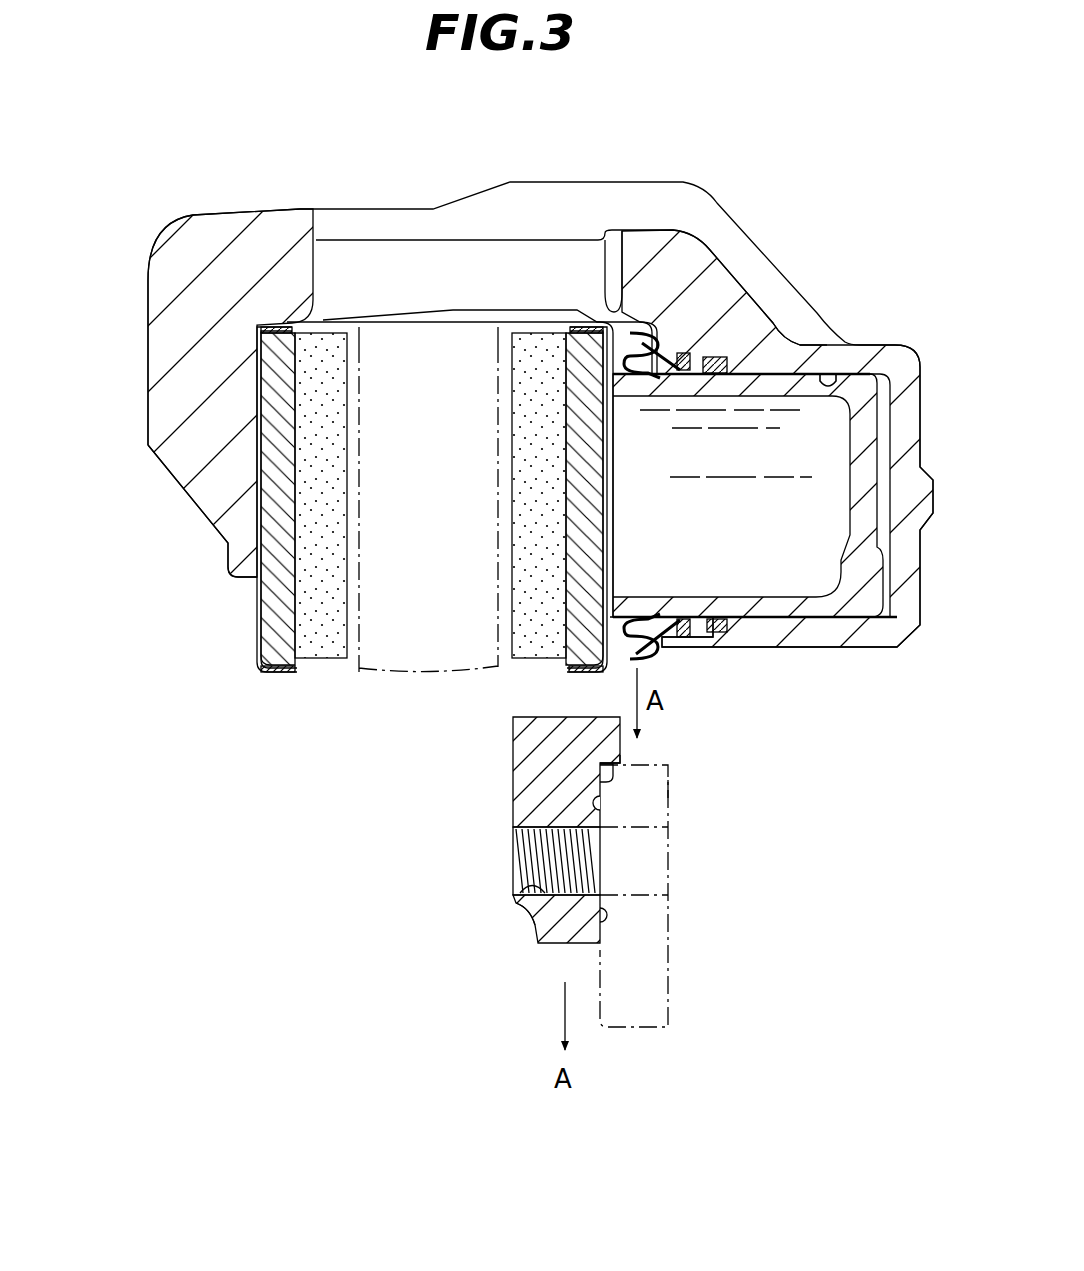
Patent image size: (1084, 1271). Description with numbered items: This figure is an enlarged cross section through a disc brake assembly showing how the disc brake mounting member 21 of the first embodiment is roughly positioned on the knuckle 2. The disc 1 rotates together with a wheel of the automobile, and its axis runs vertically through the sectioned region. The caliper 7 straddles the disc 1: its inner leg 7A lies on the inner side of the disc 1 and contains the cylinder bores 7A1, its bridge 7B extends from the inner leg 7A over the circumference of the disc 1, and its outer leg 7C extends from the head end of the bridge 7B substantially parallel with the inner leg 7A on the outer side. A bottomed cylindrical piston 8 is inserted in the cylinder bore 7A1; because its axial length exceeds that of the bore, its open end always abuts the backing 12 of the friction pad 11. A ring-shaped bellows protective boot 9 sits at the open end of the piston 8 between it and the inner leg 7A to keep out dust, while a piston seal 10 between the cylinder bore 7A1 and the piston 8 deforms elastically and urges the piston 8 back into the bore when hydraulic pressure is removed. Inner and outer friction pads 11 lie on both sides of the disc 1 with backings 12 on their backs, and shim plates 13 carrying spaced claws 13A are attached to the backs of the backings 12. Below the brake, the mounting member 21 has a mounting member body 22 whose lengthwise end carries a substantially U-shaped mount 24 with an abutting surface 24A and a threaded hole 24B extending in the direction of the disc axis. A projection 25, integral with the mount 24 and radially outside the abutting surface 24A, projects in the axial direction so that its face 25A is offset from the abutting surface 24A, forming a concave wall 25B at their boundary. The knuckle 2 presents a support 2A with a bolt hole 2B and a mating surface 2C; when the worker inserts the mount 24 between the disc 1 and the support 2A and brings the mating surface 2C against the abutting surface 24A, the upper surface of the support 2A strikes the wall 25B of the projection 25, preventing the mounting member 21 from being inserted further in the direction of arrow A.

The disc 1 is at (375, 672).
The knuckle 2 is at (681, 918).
The supports 2A is at (655, 788).
The bolt hole 2B is at (625, 887).
The mating surface 2C is at (640, 815).
The caliper 7 is at (504, 424).
The inner leg 7A is at (880, 648).
The cylinder bores 7A1 is at (830, 378).
The bridge 7B is at (360, 212).
The outer leg 7C is at (160, 356).
The piston 8 is at (800, 612).
The protective boot 9 is at (640, 659).
The piston seal 10 is at (713, 640).
The friction pads 11 is at (520, 347).
The backings 12 is at (582, 343).
The shim plates 13 is at (616, 340).
The claws 13A is at (290, 326).
The disc brake mounting member 21 is at (580, 884).
The mounting member body 22 is at (513, 818).
The mounts 24 is at (600, 952).
The abutting surface 24A is at (598, 926).
The threaded hole 24B is at (540, 890).
The projections 25 is at (613, 717).
The faces 25A is at (630, 756).
The walls 25B is at (600, 782).